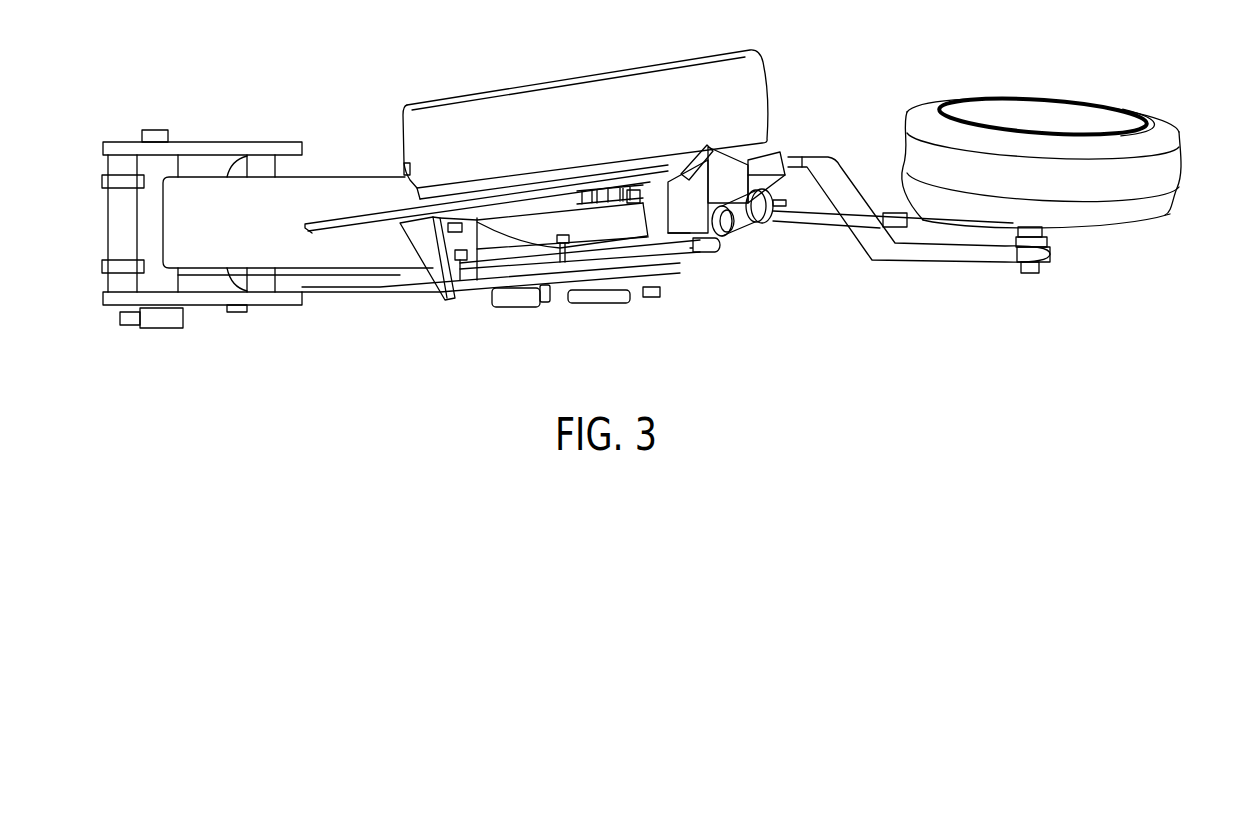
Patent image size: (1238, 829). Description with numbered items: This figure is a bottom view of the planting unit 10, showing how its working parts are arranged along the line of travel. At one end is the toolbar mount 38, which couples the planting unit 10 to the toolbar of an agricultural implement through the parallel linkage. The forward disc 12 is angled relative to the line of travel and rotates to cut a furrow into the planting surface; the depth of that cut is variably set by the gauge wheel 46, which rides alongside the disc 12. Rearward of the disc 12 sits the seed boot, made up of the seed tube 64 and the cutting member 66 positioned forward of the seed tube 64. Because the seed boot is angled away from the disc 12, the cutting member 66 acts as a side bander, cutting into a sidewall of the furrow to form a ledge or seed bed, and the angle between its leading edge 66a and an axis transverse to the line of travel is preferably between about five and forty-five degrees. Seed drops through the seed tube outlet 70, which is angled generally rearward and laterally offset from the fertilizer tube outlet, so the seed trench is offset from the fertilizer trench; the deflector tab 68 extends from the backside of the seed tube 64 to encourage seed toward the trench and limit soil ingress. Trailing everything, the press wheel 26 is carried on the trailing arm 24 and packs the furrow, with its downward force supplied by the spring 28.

The planting unit 10 is at (428, 372).
The forward disc 12 is at (305, 229).
The trailing arm 24 is at (883, 253).
The press wheel 26 is at (1172, 154).
The spring 28 is at (775, 223).
The toolbar mount 38 is at (198, 302).
The gauge wheel 46 is at (593, 98).
The seed tube 64 is at (738, 198).
The cutting member 66 is at (687, 227).
The leading edge 66a is at (693, 167).
The deflector tab 68 is at (780, 166).
The seed tube outlet 70 is at (728, 150).